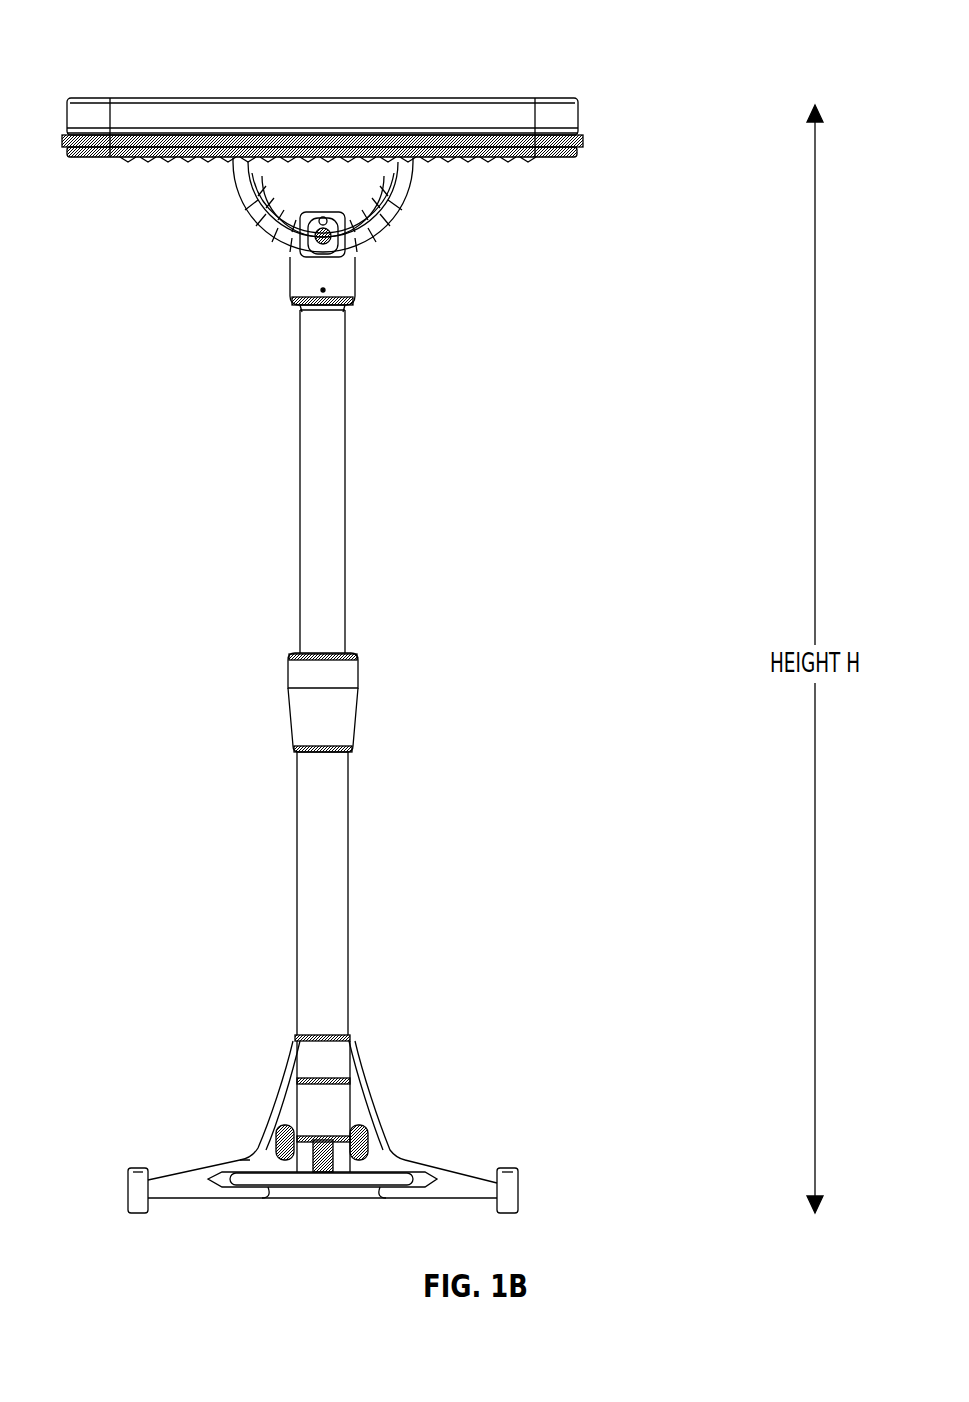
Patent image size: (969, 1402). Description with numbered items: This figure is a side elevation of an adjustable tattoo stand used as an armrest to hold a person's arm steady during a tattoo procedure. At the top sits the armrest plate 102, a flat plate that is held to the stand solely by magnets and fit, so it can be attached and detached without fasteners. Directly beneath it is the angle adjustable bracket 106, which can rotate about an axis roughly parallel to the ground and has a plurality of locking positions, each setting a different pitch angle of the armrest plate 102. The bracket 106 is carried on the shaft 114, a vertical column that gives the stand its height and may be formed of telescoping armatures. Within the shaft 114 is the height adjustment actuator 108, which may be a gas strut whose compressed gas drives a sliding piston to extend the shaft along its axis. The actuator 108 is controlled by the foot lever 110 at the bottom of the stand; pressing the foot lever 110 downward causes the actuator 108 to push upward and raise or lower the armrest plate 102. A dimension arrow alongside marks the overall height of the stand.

The armrest plate 102 is at (297, 108).
The angle adjustable bracket 106 is at (258, 222).
The shaft 114 is at (300, 575).
The height adjustment actuator 108 is at (327, 830).
The foot lever 110 is at (260, 1162).